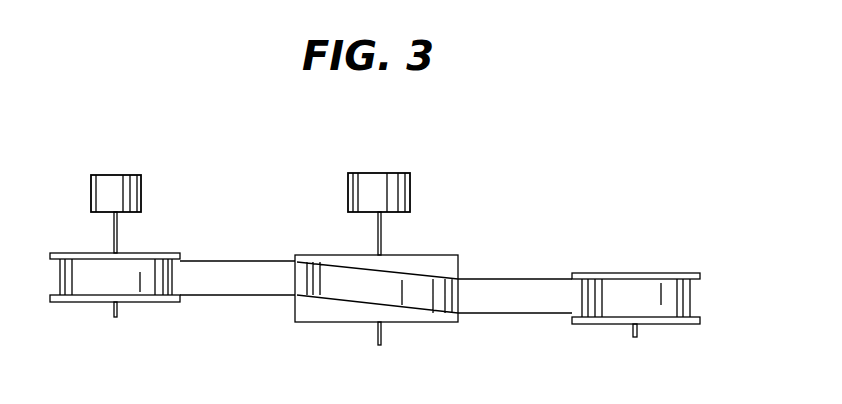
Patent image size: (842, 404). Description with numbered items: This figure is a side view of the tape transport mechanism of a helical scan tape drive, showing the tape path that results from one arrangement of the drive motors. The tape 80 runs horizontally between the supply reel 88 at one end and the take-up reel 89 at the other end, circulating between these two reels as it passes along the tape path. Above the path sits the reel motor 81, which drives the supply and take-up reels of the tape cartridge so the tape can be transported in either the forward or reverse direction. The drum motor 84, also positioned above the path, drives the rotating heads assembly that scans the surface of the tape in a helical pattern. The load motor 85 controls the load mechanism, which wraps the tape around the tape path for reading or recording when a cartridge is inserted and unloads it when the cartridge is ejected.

The tape 80 is at (230, 283).
The reel motor 81 is at (117, 180).
The drum motor 84 is at (382, 180).
The load motor 85 is at (442, 262).
The supply reel 88 is at (77, 302).
The take-up reel 89 is at (677, 325).